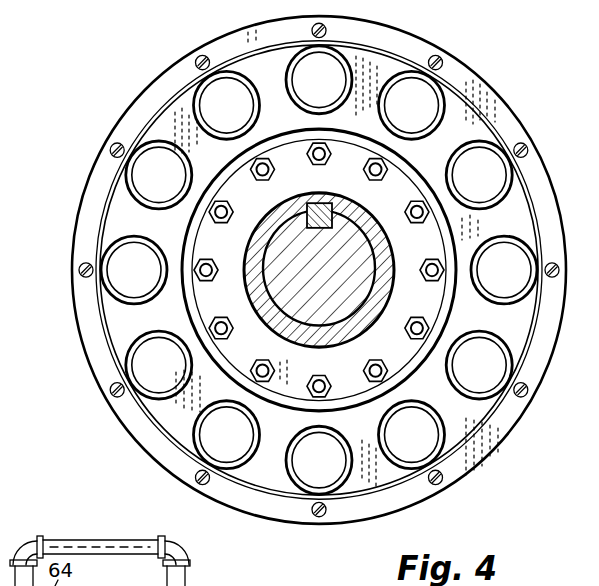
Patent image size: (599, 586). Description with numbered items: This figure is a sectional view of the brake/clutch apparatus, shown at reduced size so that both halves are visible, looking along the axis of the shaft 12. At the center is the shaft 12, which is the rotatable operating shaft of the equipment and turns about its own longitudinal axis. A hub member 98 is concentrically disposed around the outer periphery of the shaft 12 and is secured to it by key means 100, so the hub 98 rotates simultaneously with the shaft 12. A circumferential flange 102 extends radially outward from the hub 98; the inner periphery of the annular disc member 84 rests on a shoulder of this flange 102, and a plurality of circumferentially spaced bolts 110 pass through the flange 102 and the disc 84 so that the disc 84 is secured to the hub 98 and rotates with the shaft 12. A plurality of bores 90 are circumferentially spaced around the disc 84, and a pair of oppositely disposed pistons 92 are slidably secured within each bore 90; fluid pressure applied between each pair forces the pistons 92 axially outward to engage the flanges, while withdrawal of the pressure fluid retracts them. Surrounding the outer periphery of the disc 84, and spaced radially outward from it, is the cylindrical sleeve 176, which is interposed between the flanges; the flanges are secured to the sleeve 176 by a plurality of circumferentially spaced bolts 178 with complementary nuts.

The shaft 12 is at (333, 302).
The annular disc member 84 is at (168, 418).
The bore 90 is at (151, 195).
The piston 92 is at (130, 274).
The hub member 98 is at (254, 289).
The key means 100 is at (306, 207).
The circumferential flange 102 is at (342, 382).
The bolt 110 is at (263, 381).
The sleeve 176 is at (87, 213).
The bolt 178 is at (110, 388).